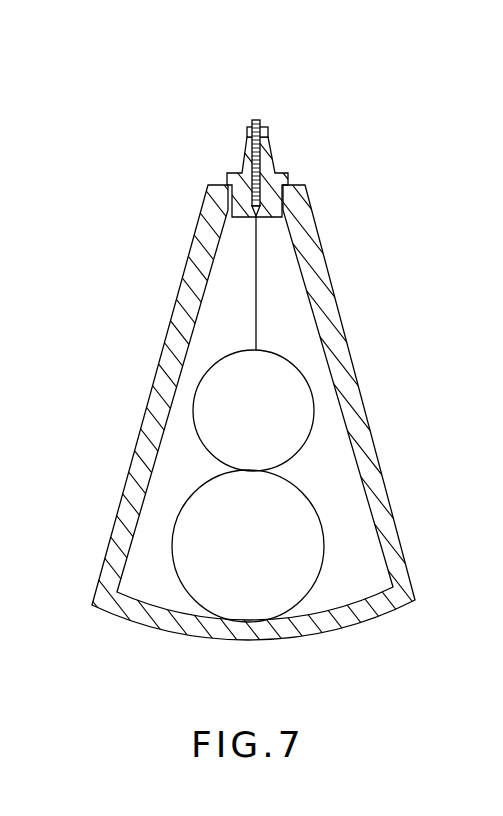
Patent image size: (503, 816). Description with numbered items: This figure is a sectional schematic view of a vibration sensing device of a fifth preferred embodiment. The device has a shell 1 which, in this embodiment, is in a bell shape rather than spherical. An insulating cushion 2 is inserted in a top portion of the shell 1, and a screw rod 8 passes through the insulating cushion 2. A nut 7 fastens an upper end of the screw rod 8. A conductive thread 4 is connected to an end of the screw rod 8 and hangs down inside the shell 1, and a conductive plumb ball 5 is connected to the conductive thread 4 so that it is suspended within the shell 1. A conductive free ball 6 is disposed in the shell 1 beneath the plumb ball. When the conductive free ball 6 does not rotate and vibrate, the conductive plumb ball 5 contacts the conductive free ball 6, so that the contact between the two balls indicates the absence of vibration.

The spherical shell 1 is at (372, 440).
The insulating cushion 2 is at (238, 168).
The conductive thread 4 is at (262, 320).
The conductive plumb ball 5 is at (303, 400).
The conductive free ball 6 is at (220, 600).
The nut 7 is at (268, 128).
The screw rod 8 is at (255, 118).